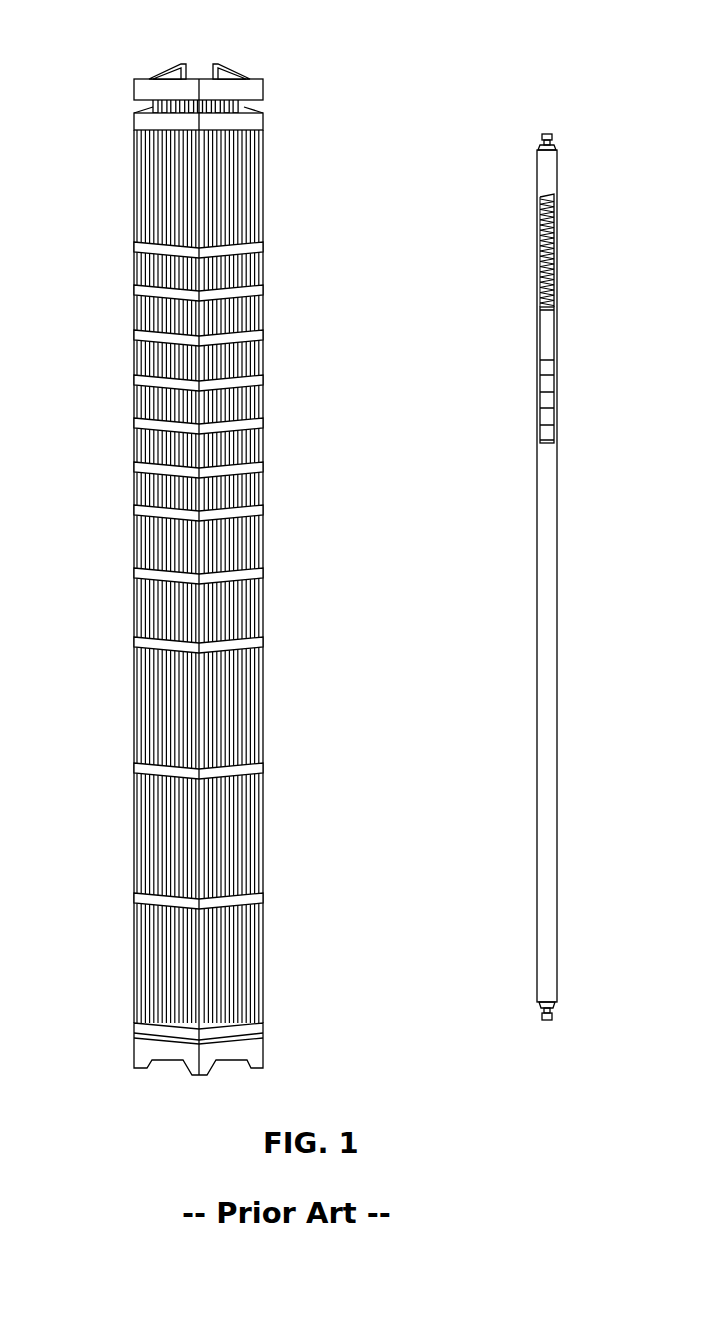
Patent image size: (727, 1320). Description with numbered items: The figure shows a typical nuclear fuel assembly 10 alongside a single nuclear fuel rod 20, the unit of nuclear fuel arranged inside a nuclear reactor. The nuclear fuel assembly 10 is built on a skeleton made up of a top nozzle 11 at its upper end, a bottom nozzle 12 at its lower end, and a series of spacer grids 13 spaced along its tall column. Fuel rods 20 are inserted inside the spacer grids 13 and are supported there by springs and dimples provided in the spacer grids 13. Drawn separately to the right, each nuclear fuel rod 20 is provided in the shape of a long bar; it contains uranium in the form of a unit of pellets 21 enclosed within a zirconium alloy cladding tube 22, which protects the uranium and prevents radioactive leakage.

The nuclear fuel assembly 10 is at (222, 543).
The top nozzle 11 is at (134, 88).
The bottom nozzle 12 is at (143, 1048).
The spacer grids 13 is at (143, 570).
The fuel rod 20 is at (475, 577).
The pellets 21 is at (540, 400).
The cladding tube 22 is at (540, 544).